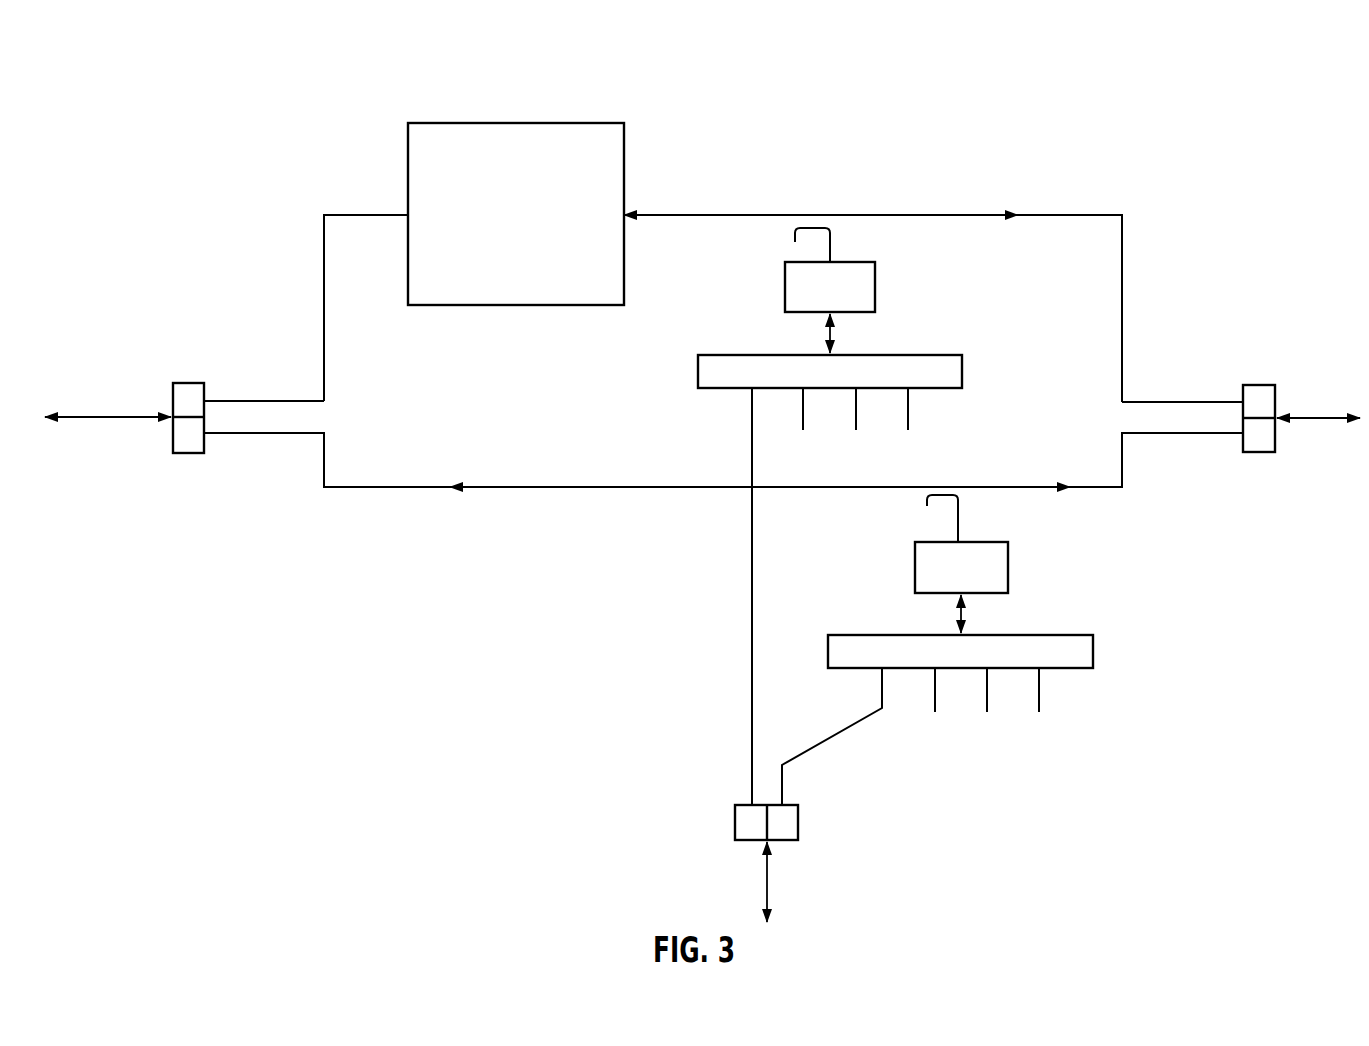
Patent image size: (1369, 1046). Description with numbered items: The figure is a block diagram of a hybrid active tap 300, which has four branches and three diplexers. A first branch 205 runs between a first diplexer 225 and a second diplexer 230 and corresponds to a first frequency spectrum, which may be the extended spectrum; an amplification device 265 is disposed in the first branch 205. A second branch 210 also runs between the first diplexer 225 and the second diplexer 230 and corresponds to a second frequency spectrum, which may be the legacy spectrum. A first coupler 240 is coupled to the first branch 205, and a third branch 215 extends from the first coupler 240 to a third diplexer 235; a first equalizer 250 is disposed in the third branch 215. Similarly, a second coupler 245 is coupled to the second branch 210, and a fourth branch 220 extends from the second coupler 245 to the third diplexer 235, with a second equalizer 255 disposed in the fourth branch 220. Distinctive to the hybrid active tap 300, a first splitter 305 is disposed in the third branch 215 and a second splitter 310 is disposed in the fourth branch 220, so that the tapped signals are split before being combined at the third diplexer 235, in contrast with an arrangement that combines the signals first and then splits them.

The hybrid active tap 300 is at (230, 70).
The amplification device 265 is at (438, 123).
The first branch 205 is at (978, 214).
The second branch 210 is at (657, 487).
The first coupler 240 is at (812, 228).
The first equalizer 250 is at (805, 262).
The first splitter 305 is at (718, 355).
The third branch 215 is at (685, 430).
The first diplexer 225 is at (190, 383).
The second diplexer 230 is at (1258, 385).
The second coupler 245 is at (952, 503).
The second equalizer 255 is at (915, 568).
The fourth branch 220 is at (1050, 561).
The second splitter 310 is at (828, 652).
The third diplexer 235 is at (735, 822).